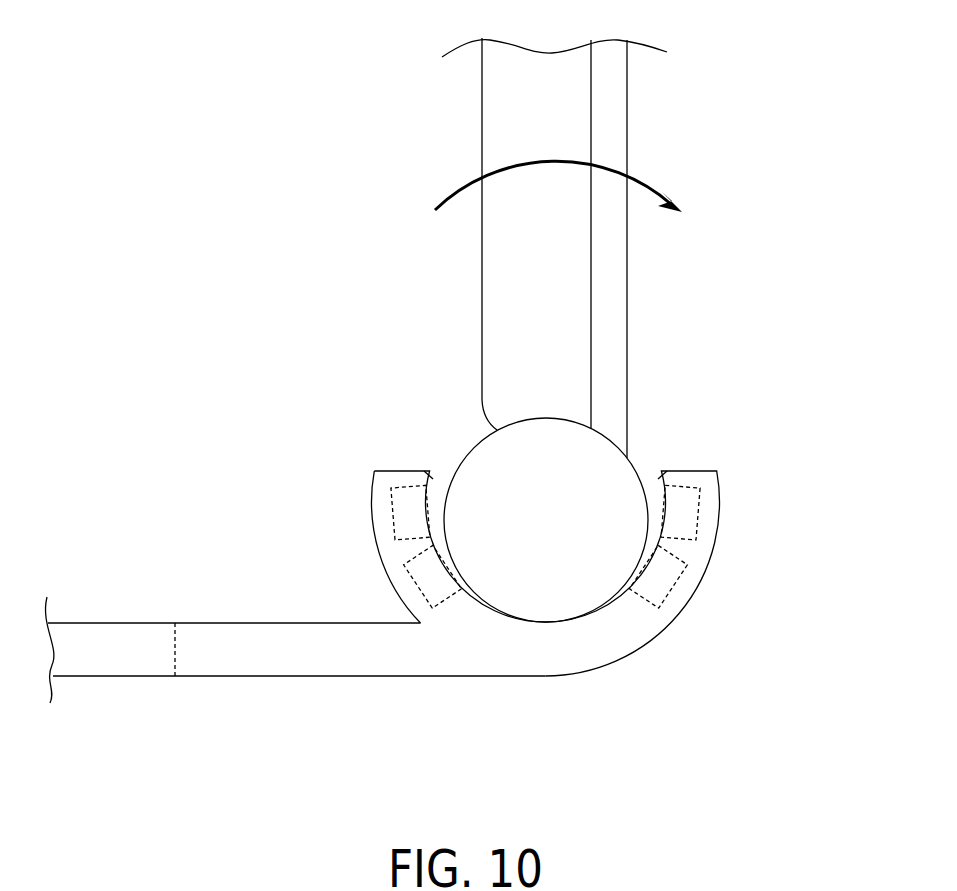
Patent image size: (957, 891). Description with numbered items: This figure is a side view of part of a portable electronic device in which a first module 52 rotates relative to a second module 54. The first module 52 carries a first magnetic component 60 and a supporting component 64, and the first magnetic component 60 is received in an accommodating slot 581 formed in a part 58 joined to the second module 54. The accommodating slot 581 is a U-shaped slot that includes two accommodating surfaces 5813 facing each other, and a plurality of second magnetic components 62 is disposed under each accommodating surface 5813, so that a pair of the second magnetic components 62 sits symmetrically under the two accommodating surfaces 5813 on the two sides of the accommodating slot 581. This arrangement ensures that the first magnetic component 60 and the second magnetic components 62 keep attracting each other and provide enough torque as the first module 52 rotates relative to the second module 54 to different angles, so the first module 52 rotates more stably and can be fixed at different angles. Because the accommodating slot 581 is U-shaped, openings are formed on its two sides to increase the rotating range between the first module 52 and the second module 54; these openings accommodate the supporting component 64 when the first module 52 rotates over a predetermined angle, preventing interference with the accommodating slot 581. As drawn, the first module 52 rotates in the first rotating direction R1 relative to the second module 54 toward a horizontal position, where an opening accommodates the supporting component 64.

The first module 52 is at (492, 98).
The supporting component 64 is at (613, 92).
The first rotating direction R1 is at (447, 195).
The first magnetic component 60 is at (627, 493).
The socket 58 is at (573, 652).
The accommodating slot 581 is at (443, 473).
The accommodating surfaces 5813 is at (429, 477).
The second magnetic components 62 is at (395, 512).
The second module 54 is at (97, 662).